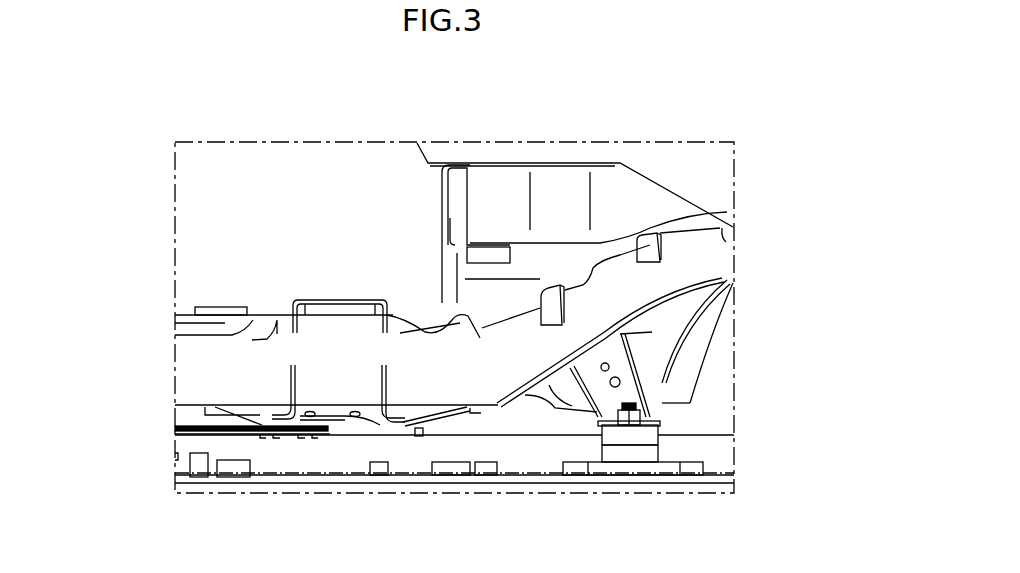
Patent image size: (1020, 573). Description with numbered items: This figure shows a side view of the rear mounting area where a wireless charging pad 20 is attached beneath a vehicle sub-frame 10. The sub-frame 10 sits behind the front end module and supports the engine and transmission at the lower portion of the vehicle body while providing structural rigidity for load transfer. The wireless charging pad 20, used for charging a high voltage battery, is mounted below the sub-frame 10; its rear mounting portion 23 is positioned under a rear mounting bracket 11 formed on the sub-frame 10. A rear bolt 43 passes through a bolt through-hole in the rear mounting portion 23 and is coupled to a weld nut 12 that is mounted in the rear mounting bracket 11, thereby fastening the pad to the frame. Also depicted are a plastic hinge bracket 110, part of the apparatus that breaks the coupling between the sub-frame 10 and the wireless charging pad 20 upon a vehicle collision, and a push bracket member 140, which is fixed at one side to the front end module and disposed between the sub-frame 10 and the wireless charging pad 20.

The sub-frame 10 is at (350, 278).
The rear mounting bracket 11 is at (622, 367).
The weld nut 12 is at (641, 413).
The wireless charging pad 20 is at (302, 458).
The rear mounting portion 23 is at (641, 456).
The rear bolt 43 is at (663, 383).
The plastic hinge bracket 110 is at (621, 452).
The push bracket member 140 is at (182, 416).